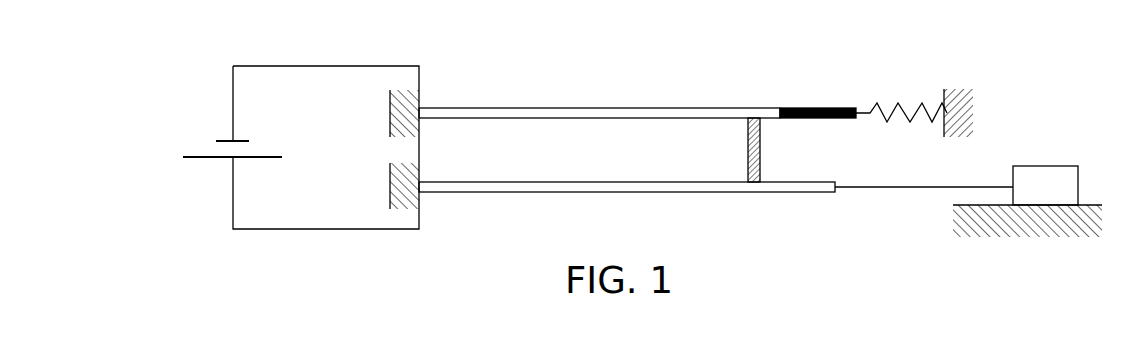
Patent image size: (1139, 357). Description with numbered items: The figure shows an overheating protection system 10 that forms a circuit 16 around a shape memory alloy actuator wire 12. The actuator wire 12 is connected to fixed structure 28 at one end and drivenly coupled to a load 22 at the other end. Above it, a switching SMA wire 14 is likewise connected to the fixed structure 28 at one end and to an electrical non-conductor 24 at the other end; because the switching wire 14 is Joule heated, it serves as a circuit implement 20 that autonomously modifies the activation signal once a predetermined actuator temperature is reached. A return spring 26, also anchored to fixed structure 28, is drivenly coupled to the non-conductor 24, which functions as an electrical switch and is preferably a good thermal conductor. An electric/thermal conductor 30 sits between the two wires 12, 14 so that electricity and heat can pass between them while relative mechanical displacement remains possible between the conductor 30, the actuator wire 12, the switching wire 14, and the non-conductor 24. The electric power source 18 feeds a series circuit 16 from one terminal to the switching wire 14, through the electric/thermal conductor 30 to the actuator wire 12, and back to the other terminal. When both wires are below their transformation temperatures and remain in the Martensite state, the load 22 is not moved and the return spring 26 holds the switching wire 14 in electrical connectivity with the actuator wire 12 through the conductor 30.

The overheating protection system 10 is at (1020, 39).
The shape memory alloy actuator wire 12 is at (778, 192).
The switching SMA wire 14 is at (663, 108).
The circuit 16 is at (351, 66).
The electric power source 18 is at (207, 158).
The circuit implement 20 is at (511, 88).
The load 22 is at (1078, 187).
The electrical non-conductor 24 is at (787, 108).
The return spring 26 is at (897, 105).
The fixed structure 28 is at (390, 178).
The electric/thermal conductor 30 is at (748, 152).